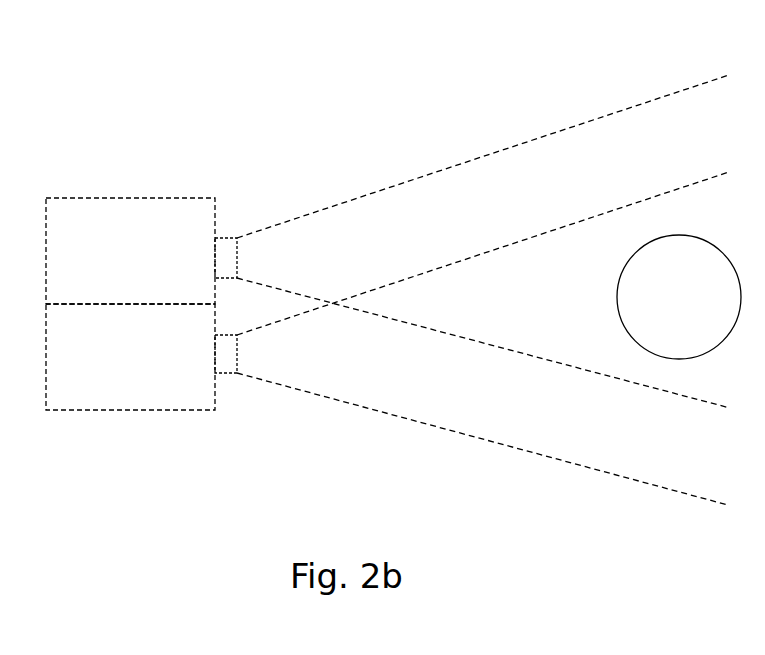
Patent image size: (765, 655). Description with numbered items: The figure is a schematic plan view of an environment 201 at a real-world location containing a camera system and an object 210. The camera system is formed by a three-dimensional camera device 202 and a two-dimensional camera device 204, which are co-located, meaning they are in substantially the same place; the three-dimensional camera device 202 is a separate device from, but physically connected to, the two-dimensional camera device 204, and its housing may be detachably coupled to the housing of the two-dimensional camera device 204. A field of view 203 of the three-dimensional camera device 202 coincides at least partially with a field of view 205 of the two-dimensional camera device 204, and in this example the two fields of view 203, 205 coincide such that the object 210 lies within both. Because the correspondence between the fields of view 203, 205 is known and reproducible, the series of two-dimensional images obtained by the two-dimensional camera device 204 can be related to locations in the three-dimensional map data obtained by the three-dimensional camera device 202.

The environment 201 is at (508, 127).
The 3D-camera-device 202 is at (100, 263).
The field of view of the 3D-camera-device 203 is at (417, 210).
The 2D-camera-device 204 is at (100, 369).
The field of view of the 2D-camera-device 205 is at (400, 393).
The object 210 is at (655, 312).